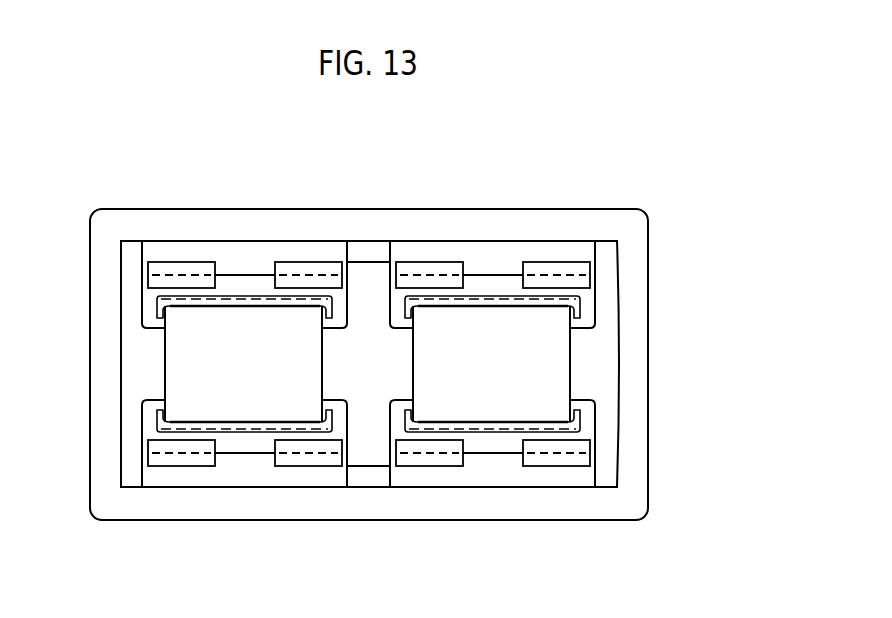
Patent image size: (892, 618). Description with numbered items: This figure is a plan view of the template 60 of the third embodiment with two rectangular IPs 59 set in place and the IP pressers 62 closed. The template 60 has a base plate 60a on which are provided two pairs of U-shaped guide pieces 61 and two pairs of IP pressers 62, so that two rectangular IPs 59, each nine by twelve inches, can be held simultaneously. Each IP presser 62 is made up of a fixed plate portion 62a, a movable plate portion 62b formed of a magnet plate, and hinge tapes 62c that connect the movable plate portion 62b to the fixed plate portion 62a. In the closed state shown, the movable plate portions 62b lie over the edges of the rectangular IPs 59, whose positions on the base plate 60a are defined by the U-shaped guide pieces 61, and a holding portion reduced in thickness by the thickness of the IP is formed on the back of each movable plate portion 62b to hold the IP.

The rectangular IP 59 is at (415, 392).
The template 60 is at (344, 203).
The base plate 60a is at (602, 352).
The U-shaped guide piece 61 is at (160, 318).
The IP presser 62 is at (214, 232).
The fixed plate portion 62a is at (168, 252).
The movable plate portion 62b is at (588, 305).
The hinge tape 62c is at (153, 260).